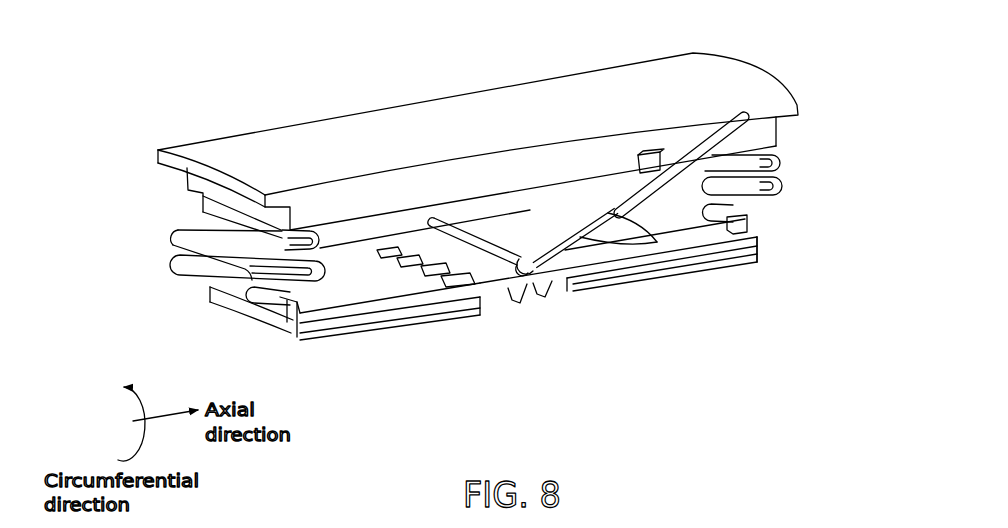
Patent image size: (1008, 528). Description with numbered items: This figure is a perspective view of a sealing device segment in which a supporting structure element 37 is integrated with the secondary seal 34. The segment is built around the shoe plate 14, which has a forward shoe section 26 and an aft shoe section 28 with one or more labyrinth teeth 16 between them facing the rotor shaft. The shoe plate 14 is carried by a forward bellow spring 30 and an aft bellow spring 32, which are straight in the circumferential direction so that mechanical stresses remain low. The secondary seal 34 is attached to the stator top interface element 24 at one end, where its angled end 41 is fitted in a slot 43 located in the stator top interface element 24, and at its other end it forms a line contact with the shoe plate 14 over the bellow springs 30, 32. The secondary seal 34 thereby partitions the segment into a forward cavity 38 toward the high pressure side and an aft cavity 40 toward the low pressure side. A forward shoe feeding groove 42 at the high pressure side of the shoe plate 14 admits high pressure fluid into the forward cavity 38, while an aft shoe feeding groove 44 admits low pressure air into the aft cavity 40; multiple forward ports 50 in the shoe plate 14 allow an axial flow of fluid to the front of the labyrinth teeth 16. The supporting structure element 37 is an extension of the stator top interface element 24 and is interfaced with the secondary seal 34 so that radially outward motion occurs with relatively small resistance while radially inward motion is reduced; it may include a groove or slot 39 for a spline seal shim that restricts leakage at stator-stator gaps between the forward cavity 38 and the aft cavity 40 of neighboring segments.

The shoe plate 14 is at (219, 313).
The labyrinth teeth 16 is at (552, 284).
The stator top interface element 24 is at (217, 138).
The forward shoe section 26 is at (302, 348).
The aft shoe section 28 is at (618, 267).
The forward bellow spring 30 is at (176, 237).
The aft bellow spring 32 is at (779, 160).
The secondary seal 34 is at (521, 215).
The supporting structure element 37 is at (658, 200).
The forward cavity 38 is at (451, 255).
The groove or slot 39 is at (716, 136).
The aft cavity 40 is at (693, 233).
The angled end 41 is at (653, 152).
The forward shoe feeding groove 42 is at (295, 330).
The slot 43 is at (638, 163).
The aft shoe feeding groove 44 is at (761, 251).
The forward ports 50 is at (412, 256).